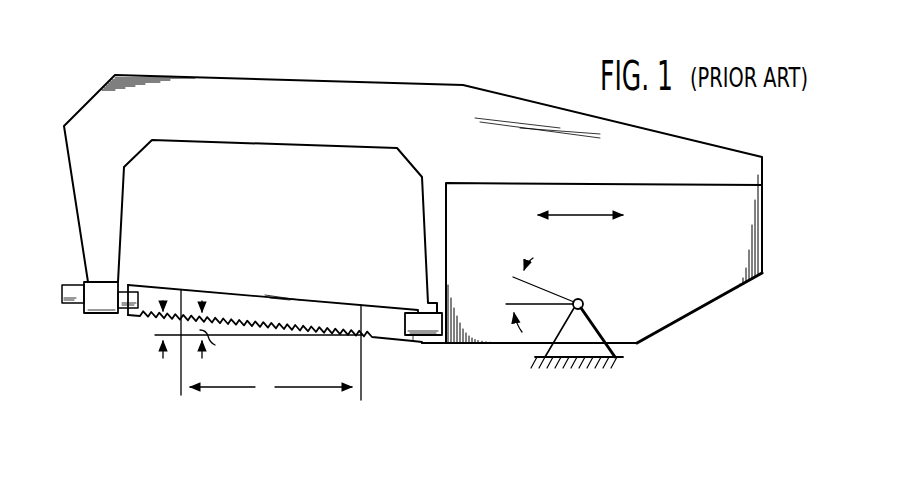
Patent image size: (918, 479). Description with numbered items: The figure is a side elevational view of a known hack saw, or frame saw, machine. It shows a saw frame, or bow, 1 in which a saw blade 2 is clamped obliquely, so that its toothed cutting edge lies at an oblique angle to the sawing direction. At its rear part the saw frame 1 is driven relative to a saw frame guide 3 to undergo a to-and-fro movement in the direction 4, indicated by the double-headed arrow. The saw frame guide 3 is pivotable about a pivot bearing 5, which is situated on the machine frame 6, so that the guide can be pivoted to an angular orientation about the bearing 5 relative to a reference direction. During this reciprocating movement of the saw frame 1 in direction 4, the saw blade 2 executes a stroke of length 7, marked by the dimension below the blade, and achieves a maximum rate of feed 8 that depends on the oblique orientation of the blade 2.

The saw frame 1 is at (290, 103).
The saw blade 2 is at (292, 308).
The saw frame guide 3 is at (726, 277).
The direction 4 is at (583, 216).
The pivot bearing 5 is at (584, 303).
The machine frame 6 is at (570, 365).
The stroke length 7 is at (266, 380).
The maximum rate of feed 8 is at (166, 331).